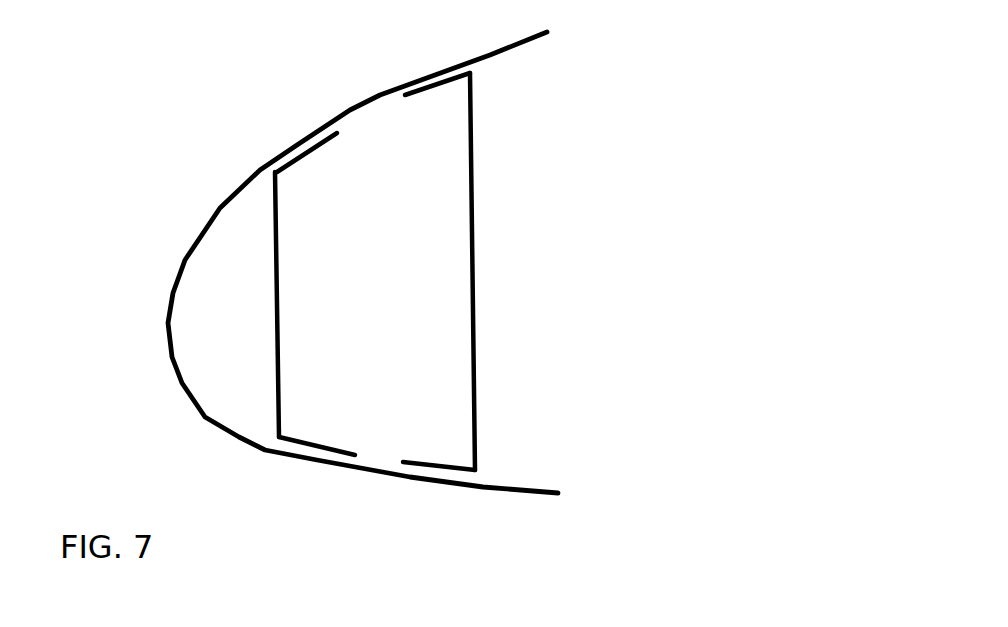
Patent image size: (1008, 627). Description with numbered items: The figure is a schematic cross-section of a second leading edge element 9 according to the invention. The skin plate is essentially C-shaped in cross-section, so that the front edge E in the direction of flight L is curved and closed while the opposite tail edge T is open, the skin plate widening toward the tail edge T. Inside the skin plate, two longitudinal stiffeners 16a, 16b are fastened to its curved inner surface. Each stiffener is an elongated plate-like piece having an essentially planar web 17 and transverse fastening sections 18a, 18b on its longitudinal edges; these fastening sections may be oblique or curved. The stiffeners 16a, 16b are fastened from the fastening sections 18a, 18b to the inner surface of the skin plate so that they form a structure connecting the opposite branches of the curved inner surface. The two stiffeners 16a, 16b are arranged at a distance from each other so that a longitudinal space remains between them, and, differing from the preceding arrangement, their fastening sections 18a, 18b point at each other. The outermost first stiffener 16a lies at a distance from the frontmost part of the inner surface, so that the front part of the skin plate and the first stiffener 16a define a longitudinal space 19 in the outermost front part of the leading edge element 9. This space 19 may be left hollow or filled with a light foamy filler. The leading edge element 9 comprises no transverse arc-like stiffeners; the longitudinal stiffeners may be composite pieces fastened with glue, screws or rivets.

The leading edge element 9 is at (196, 80).
The first stiffener 16a is at (250, 404).
The second stiffener 16b is at (503, 435).
The web 17 is at (280, 293).
The fastening section 18a is at (432, 83).
The fastening section 18b is at (310, 448).
The longitudinal space 19 is at (240, 342).
The front edge E is at (118, 156).
The tail edge T is at (673, 127).
The direction of flight L is at (740, 292).